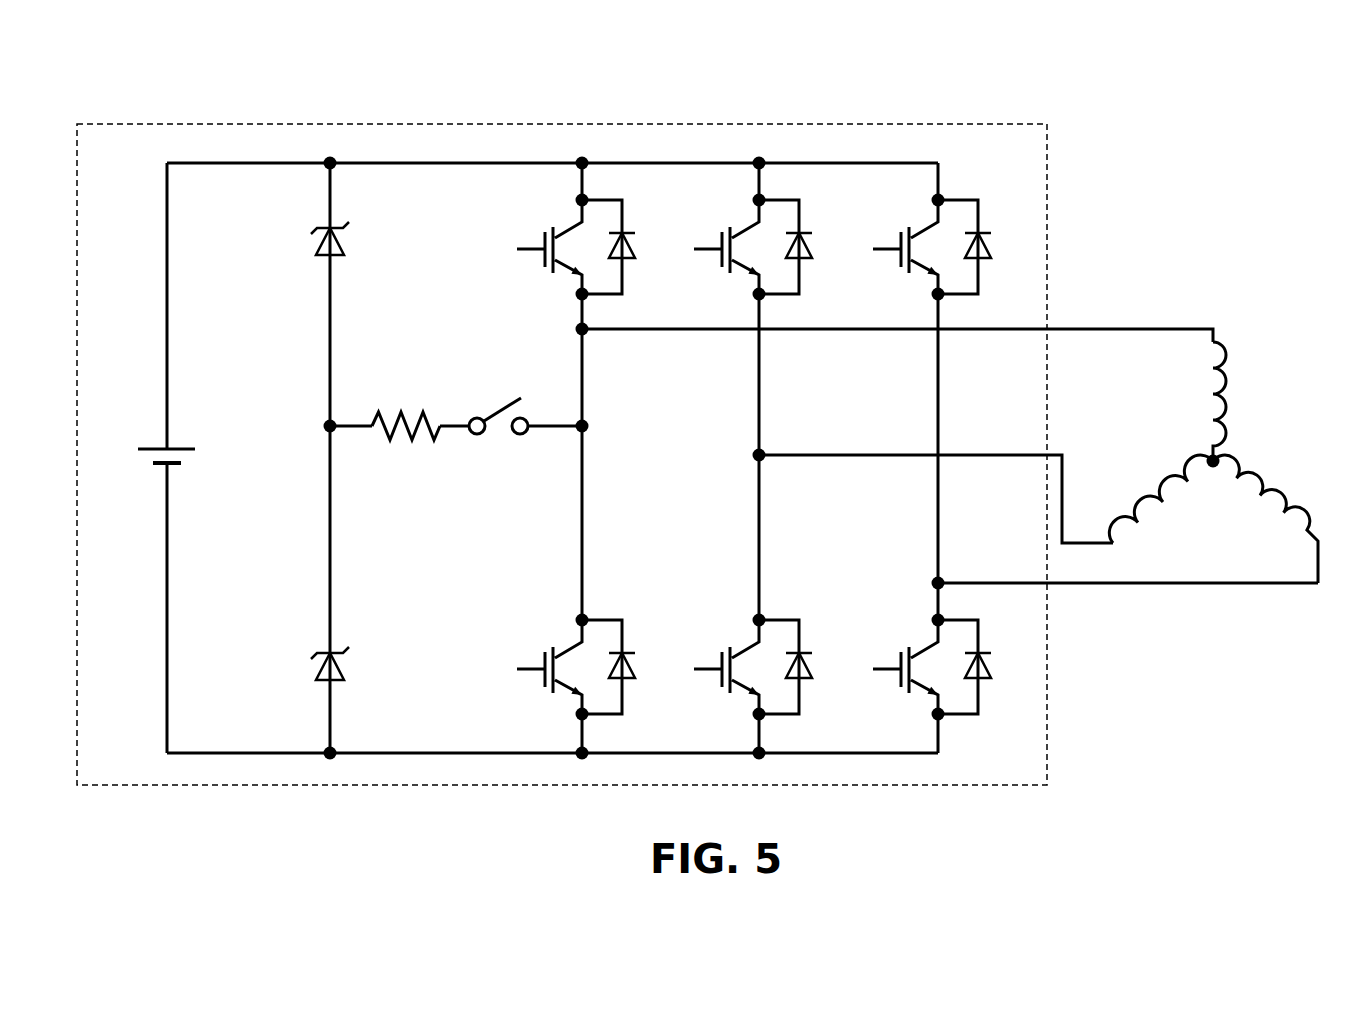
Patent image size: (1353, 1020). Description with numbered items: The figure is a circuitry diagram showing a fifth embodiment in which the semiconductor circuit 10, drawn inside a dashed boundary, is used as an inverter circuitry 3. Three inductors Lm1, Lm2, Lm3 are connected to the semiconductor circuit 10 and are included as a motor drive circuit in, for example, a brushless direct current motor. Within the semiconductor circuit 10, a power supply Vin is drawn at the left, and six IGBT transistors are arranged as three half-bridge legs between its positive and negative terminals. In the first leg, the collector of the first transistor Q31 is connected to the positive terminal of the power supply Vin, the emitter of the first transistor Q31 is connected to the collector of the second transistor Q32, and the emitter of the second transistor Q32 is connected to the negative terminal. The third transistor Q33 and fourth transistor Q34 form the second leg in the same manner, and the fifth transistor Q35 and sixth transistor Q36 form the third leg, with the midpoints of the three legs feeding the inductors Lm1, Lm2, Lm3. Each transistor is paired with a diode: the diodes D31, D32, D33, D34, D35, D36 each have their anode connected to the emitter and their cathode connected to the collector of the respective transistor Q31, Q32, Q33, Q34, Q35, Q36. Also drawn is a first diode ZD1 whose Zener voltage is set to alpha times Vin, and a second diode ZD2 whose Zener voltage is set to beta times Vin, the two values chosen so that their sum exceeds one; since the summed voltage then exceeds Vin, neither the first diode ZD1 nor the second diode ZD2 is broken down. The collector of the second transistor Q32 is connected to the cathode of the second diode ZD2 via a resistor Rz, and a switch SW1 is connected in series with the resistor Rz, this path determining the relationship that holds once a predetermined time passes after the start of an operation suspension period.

The inverter circuitry 3 is at (1139, 76).
The semiconductor circuit 10 is at (880, 124).
The power supply Vin is at (149, 433).
The first diode ZD1 is at (297, 240).
The second diode ZD2 is at (296, 665).
The resistor Rz is at (406, 444).
The switch SW1 is at (498, 436).
The first transistor Q31 is at (547, 244).
The second transistor Q32 is at (547, 664).
The third transistor Q33 is at (724, 244).
The fourth transistor Q34 is at (724, 664).
The fifth transistor Q35 is at (903, 244).
The sixth transistor Q36 is at (903, 664).
The diode D31 is at (633, 247).
The diode D32 is at (633, 667).
The diode D33 is at (810, 247).
The diode D34 is at (810, 667).
The diode D35 is at (989, 247).
The diode D36 is at (989, 667).
The inductor Lm1 is at (1256, 401).
The inductor Lm2 is at (1159, 495).
The inductor Lm3 is at (1269, 519).